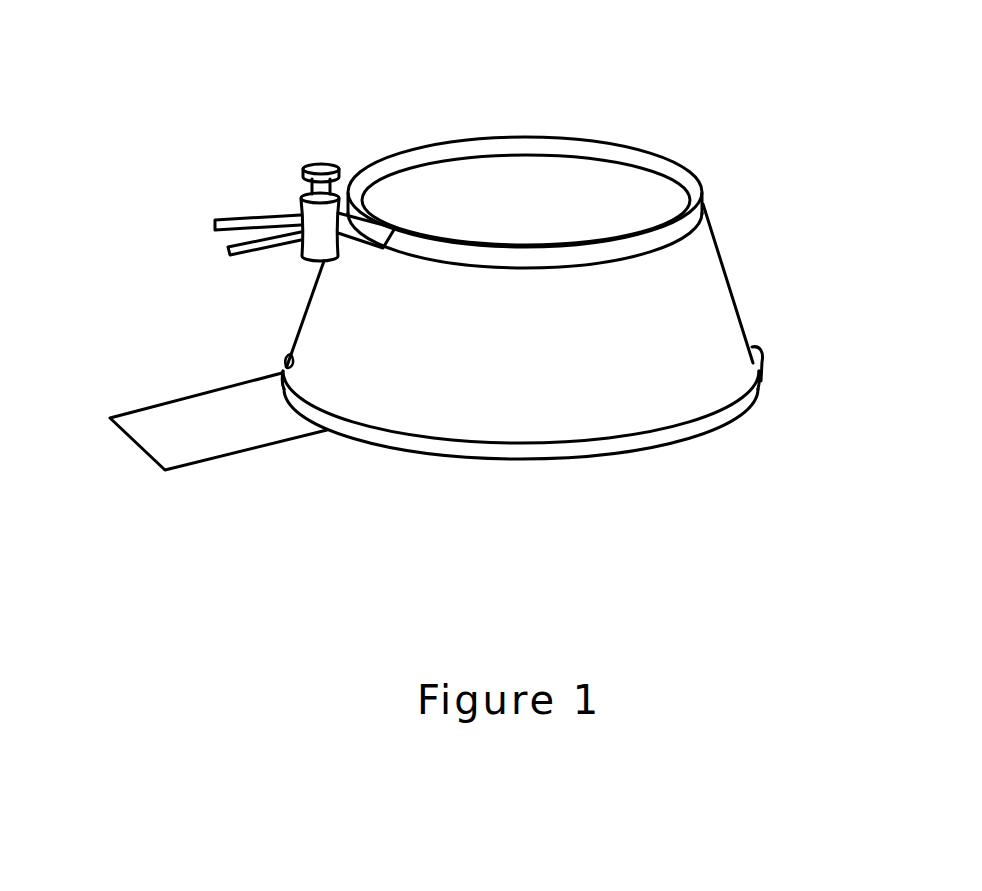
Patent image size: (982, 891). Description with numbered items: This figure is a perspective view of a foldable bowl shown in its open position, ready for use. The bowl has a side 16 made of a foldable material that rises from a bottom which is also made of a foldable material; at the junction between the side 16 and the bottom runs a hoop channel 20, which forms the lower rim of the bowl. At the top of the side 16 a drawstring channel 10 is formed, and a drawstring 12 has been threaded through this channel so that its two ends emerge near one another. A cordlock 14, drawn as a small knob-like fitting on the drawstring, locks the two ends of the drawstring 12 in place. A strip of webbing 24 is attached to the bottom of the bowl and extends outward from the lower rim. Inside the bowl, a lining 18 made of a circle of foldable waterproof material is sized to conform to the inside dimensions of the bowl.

The drawstring channel 10 is at (690, 213).
The drawstring 12 is at (213, 226).
The cordlock 14 is at (300, 222).
The side 16 is at (695, 322).
The lining 18 is at (520, 195).
The hoop channel 20 is at (742, 400).
The webbing 24 is at (180, 438).